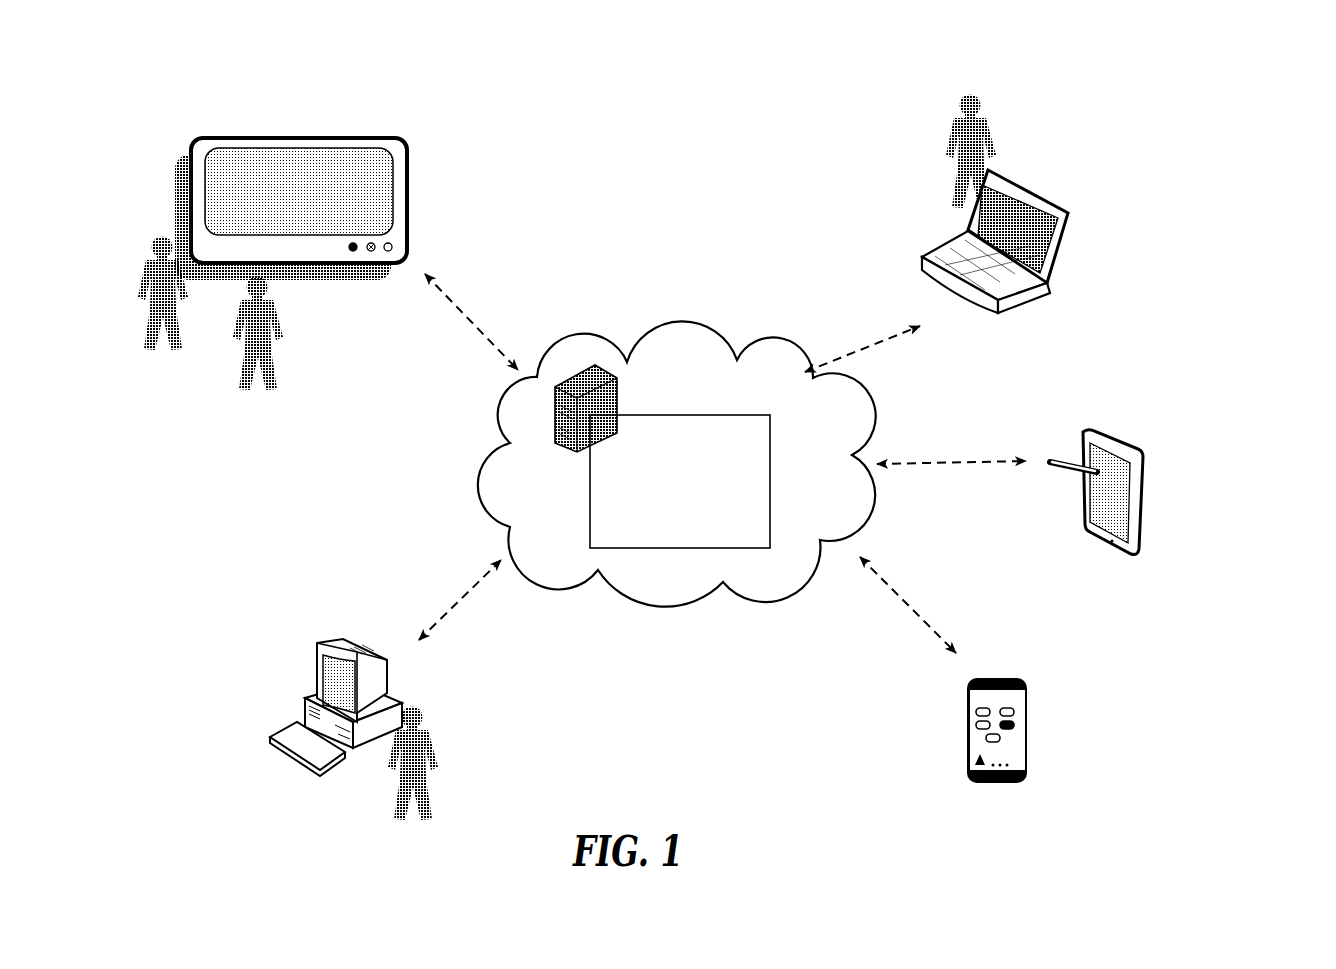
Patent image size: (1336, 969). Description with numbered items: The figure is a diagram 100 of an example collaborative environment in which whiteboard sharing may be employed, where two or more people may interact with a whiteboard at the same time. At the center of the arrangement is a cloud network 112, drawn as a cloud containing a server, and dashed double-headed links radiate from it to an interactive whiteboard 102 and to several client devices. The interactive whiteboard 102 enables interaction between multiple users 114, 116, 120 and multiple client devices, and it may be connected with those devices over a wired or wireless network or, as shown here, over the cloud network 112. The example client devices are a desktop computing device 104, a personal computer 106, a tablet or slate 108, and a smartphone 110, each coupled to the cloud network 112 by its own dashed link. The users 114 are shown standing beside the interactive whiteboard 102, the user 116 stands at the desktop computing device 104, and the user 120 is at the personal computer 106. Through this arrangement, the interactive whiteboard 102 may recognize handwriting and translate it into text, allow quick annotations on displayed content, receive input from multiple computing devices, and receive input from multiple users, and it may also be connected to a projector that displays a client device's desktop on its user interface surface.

The diagram 100 is at (1205, 79).
The interactive whiteboard 102 is at (334, 116).
The desktop computing device 104 is at (304, 629).
The personal computer 106 is at (1039, 171).
The tablet or slate 108 is at (1129, 447).
The smartphone 110 is at (978, 784).
The cloud network 112 is at (678, 321).
The users 114 is at (206, 381).
The user 116 is at (359, 813).
The user 120 is at (934, 140).